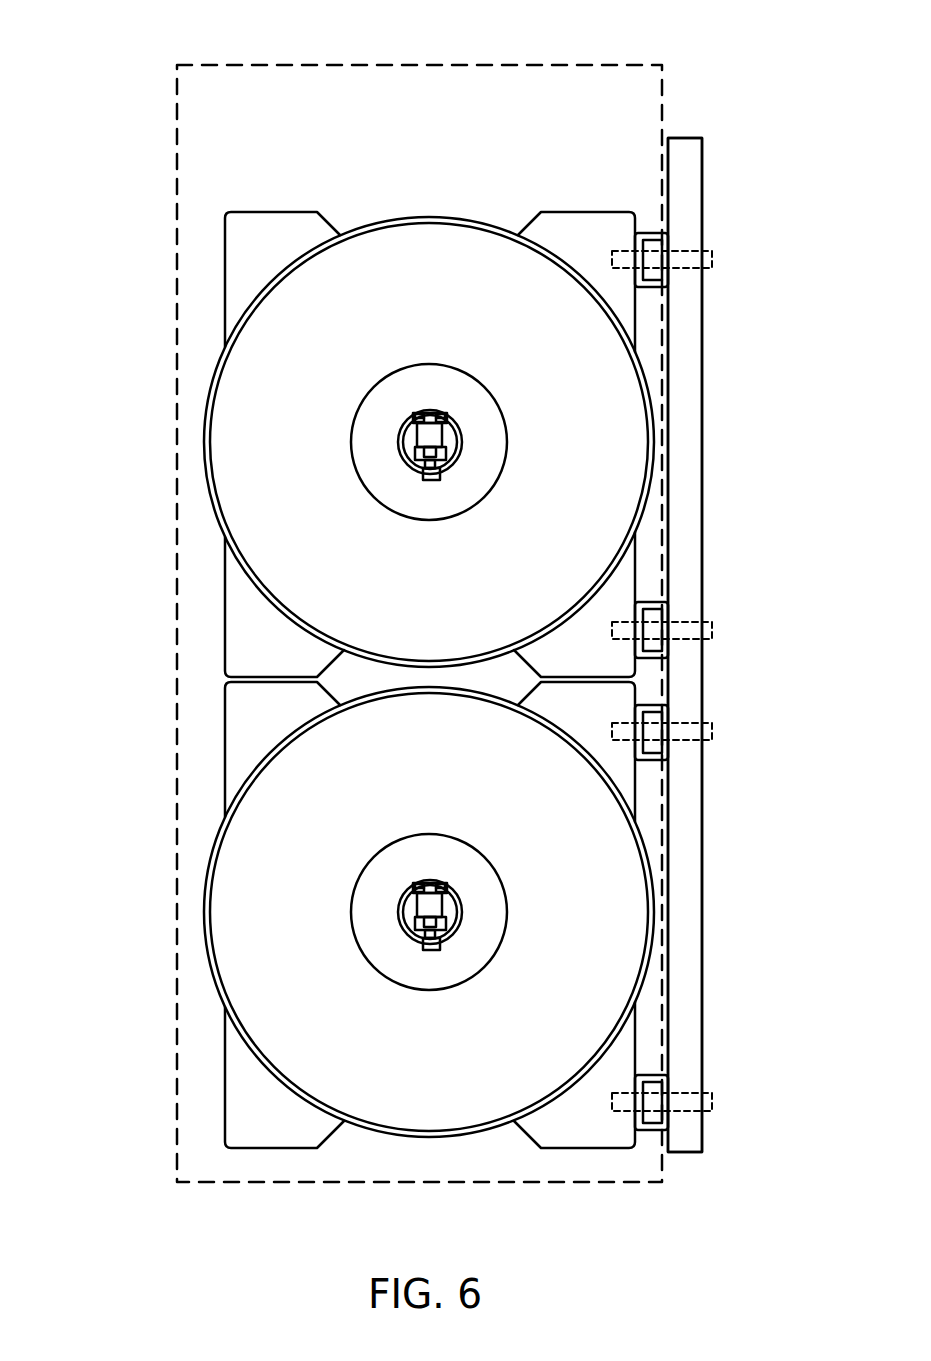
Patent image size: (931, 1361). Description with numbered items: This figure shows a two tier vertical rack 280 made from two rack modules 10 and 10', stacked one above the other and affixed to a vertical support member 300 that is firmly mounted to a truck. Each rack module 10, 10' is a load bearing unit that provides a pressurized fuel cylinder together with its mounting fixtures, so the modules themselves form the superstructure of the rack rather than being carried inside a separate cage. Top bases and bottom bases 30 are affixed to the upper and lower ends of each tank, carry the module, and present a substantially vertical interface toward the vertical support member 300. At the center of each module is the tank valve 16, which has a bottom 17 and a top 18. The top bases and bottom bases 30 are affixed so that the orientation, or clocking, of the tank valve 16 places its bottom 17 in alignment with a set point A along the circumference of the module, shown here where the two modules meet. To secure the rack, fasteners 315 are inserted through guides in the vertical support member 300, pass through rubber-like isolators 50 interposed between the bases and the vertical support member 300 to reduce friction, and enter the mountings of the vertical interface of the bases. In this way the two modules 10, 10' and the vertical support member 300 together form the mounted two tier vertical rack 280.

The two tier vertical rack 280 is at (374, 65).
The vertical support member 300 is at (702, 925).
The bottom base 30 is at (702, 467).
The rack module 10' is at (360, 442).
The rack module 10 is at (362, 912).
The tank valve 16 is at (448, 443).
The valve bottom 17 is at (432, 480).
The valve top 18 is at (432, 413).
The isolator 50 is at (668, 243).
The fastener 315 is at (712, 258).
The set point A is at (428, 660).